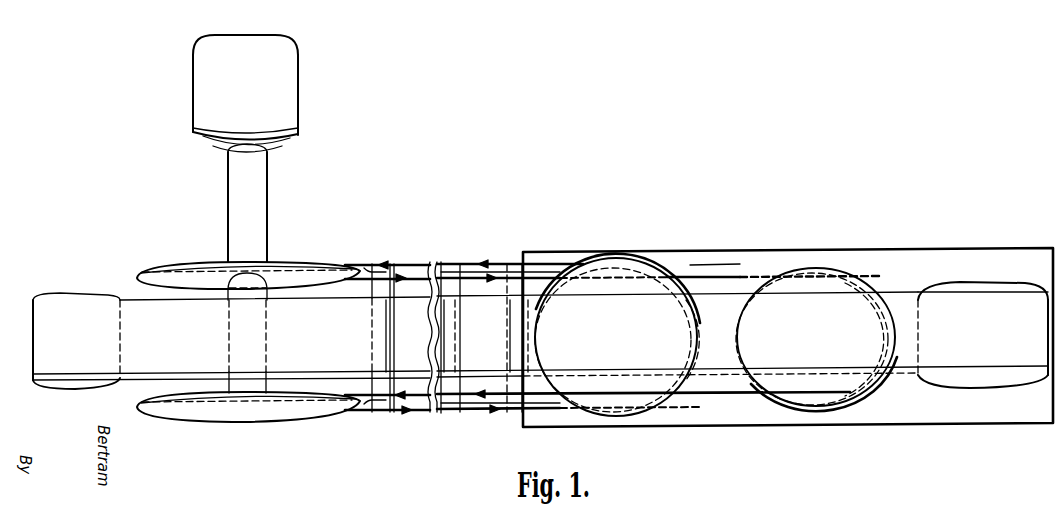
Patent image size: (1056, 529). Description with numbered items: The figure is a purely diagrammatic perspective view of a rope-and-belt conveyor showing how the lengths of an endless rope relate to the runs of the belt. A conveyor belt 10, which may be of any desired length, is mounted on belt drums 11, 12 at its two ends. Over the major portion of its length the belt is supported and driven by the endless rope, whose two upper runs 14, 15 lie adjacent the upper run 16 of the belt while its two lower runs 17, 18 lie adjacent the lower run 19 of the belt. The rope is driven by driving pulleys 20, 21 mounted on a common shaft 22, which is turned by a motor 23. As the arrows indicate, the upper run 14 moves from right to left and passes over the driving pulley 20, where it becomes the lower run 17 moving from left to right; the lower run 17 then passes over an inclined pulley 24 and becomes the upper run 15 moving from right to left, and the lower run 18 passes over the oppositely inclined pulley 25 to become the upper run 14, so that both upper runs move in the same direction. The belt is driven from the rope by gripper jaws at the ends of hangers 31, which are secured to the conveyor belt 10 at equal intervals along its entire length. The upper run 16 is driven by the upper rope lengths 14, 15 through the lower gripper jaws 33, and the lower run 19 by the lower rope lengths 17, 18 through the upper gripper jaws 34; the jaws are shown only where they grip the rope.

The conveyor belt 10 is at (142, 382).
The belt drum 11 is at (53, 388).
The belt drum 12 is at (1015, 386).
The upper run of rope 14 is at (443, 264).
The upper run of rope 15 is at (445, 405).
The upper run of belt 16 is at (512, 266).
The lower run of rope 17 is at (462, 280).
The lower run of rope 18 is at (478, 411).
The lower run of belt 19 is at (507, 392).
The driving pulley 20 is at (284, 267).
The driving pulley 21 is at (309, 418).
The common shaft 22 is at (262, 190).
The motor 23 is at (297, 107).
The inclined pulley 24 is at (868, 292).
The oppositely inclined pulley 25 is at (696, 342).
The hanger 31 is at (394, 340).
The lower gripper jaw 33 is at (400, 280).
The upper gripper jaw 34 is at (368, 279).